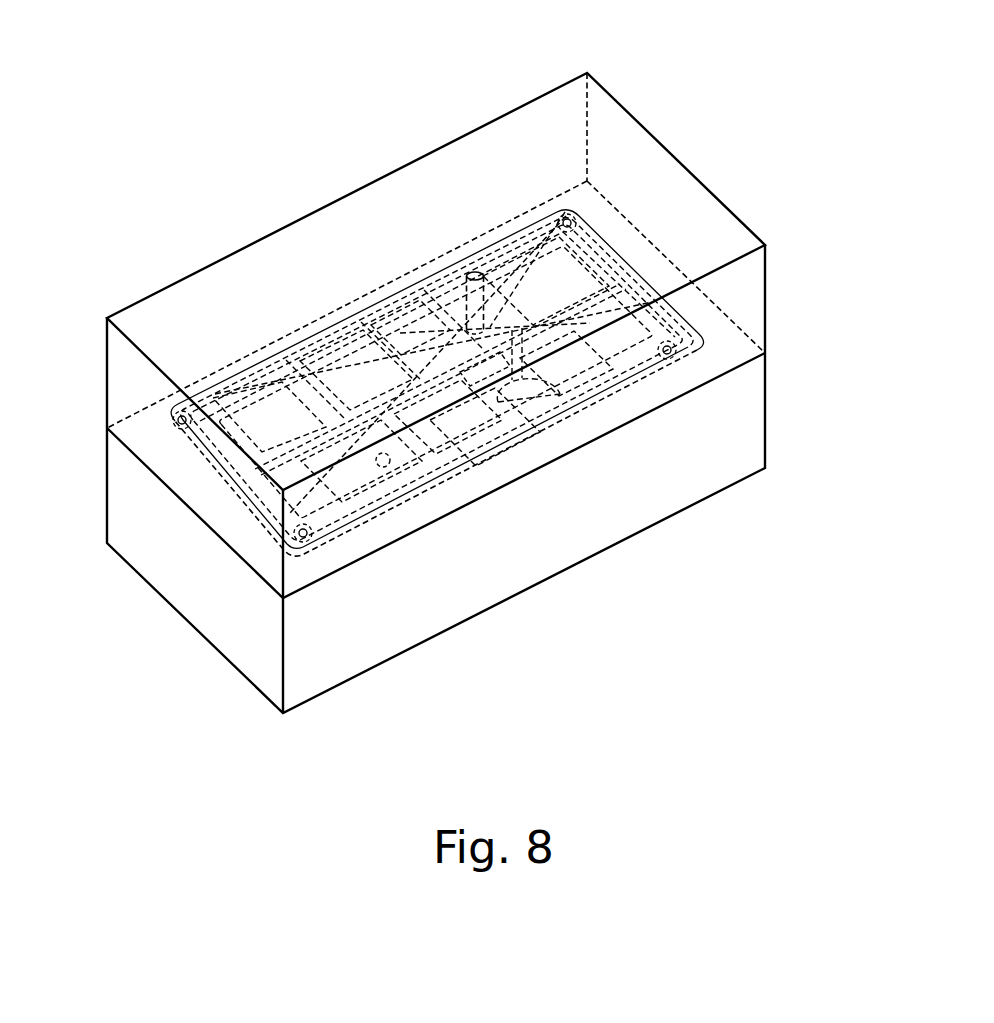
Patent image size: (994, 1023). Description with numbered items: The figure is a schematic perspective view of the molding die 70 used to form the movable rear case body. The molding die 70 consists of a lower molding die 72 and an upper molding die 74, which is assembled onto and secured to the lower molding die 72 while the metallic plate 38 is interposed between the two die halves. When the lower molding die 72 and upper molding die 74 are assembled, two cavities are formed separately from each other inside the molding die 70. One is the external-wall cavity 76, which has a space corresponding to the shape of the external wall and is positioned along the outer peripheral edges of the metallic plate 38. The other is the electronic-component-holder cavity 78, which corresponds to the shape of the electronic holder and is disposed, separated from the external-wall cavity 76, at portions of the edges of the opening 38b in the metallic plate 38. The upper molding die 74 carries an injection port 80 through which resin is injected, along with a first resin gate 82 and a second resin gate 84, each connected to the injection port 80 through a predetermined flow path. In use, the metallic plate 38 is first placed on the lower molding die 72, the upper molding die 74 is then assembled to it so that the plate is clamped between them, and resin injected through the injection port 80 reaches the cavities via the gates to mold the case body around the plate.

The molding die 70 is at (684, 86).
The lower molding die 72 is at (752, 440).
The upper molding die 74 is at (752, 297).
The external-wall cavity 76 is at (360, 548).
The electronic-component-holder cavity 78 is at (653, 390).
The injection port 80 is at (475, 271).
The first resin gate 82 is at (578, 212).
The second resin gate 84 is at (650, 290).
The metallic plate 38 is at (478, 420).
The opening 38b is at (515, 435).